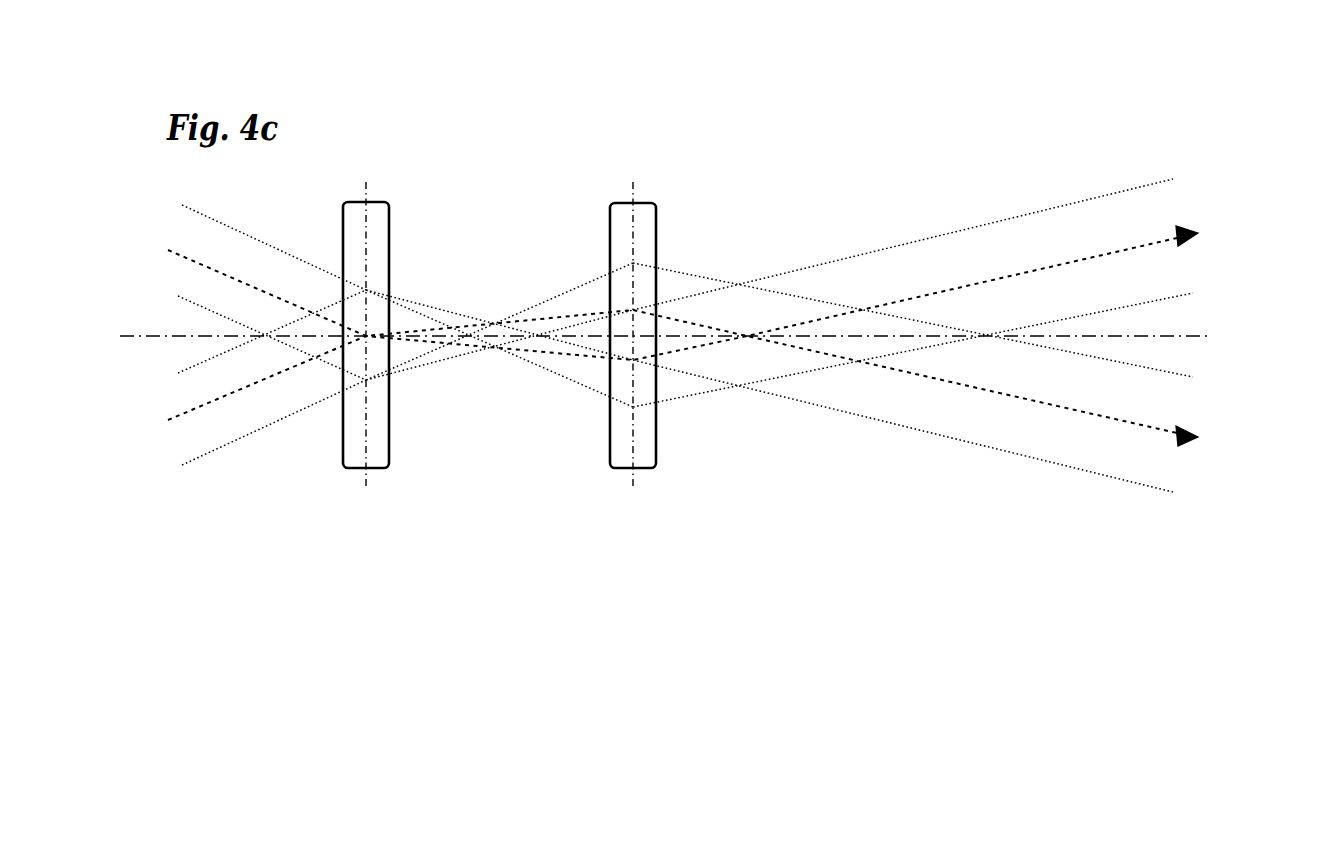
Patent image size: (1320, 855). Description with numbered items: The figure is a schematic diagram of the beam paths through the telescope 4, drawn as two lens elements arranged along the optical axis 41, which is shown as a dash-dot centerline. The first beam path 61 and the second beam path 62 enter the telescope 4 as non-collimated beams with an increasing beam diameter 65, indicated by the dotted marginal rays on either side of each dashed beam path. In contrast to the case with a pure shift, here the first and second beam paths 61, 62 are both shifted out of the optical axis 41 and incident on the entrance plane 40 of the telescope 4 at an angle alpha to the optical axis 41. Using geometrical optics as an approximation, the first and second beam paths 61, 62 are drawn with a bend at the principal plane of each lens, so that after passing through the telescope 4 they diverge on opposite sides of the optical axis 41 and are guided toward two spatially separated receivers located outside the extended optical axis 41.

The telescope 4 is at (580, 577).
The entrance plane 40 is at (367, 188).
The optical axis 41 is at (1212, 333).
The first beam path 61 is at (178, 253).
The second beam path 62 is at (182, 418).
The beam diameter 65 is at (257, 267).